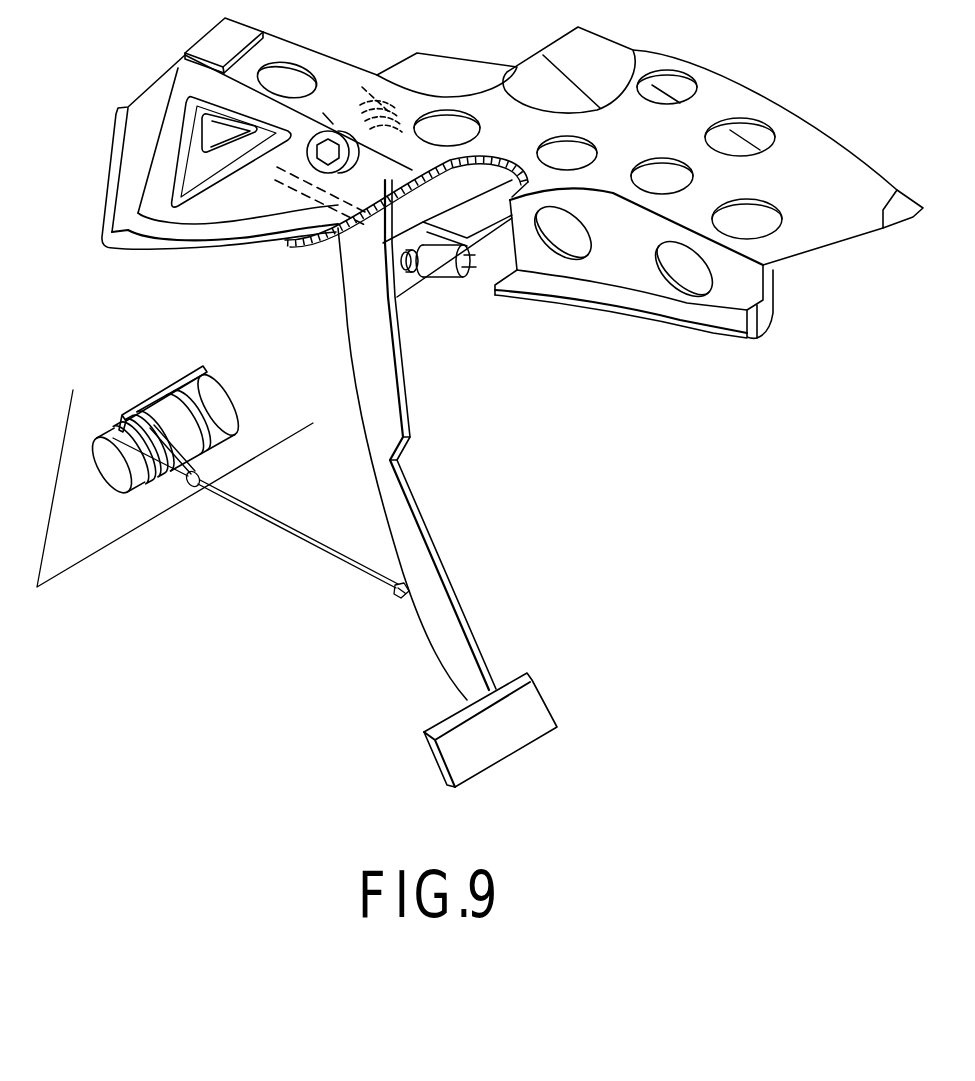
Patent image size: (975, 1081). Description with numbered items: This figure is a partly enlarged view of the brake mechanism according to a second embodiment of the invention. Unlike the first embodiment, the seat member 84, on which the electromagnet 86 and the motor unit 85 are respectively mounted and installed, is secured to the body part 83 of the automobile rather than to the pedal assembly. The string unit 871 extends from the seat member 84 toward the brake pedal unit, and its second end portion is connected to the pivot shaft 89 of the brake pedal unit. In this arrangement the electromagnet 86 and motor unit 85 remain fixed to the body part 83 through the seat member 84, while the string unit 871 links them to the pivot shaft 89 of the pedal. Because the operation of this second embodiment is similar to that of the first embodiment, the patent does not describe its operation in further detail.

The body part 83 is at (102, 523).
The seat member 84 is at (127, 413).
The motor unit 85 is at (155, 417).
The electromagnet 86 is at (217, 403).
The string unit 871 is at (263, 520).
The pivot shaft 89 is at (423, 577).